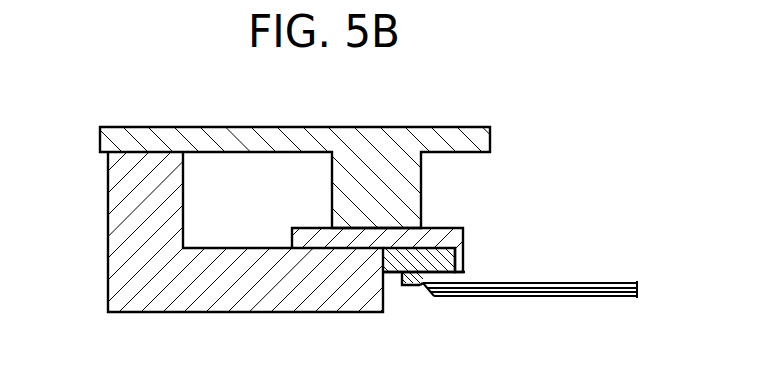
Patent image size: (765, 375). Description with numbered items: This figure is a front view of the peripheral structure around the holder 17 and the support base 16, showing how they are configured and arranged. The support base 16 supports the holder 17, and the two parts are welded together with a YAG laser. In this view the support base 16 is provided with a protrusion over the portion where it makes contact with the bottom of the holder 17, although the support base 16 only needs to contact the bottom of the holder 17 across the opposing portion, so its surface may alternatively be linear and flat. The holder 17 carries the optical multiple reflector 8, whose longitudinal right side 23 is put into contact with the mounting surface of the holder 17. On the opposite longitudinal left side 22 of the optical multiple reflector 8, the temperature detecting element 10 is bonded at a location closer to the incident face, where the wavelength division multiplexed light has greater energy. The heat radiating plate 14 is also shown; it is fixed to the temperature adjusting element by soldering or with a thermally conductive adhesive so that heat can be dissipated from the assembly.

The optical multiple reflector 8 is at (391, 275).
The temperature detecting element 10 is at (410, 284).
The heat radiating plate 14 is at (127, 178).
The support base 16 is at (200, 143).
The holder 17 is at (447, 238).
The longitudinal left side 22 is at (447, 273).
The longitudinal right side 23 is at (396, 248).